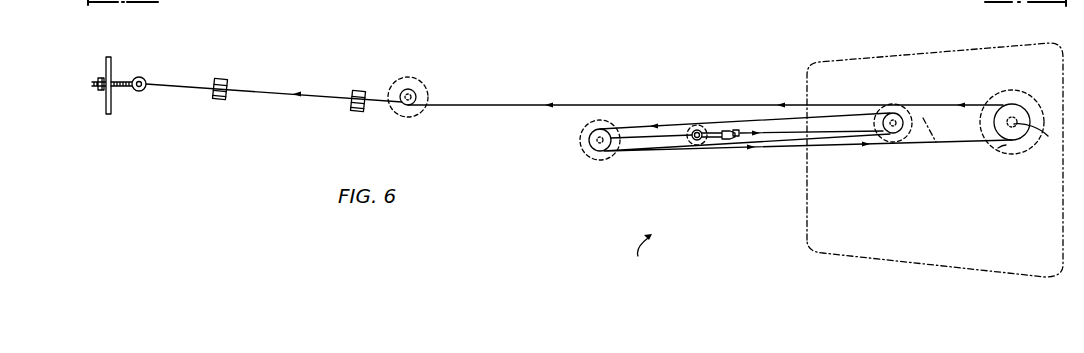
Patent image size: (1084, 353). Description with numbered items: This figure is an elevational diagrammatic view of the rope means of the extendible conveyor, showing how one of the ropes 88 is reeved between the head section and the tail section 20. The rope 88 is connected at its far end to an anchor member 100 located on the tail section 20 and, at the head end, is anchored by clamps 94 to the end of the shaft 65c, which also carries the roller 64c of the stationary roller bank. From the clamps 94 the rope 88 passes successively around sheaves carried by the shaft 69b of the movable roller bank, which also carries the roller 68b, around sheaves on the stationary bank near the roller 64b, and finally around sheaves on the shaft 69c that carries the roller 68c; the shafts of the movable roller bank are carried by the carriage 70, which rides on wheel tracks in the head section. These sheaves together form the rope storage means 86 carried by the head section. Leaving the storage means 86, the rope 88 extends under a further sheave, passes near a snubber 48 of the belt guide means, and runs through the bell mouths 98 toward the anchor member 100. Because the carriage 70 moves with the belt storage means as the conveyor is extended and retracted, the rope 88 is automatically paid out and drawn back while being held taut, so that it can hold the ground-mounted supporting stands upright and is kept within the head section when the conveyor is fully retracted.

The tail section 20 is at (112, 62).
The anchor member 100 is at (146, 78).
The bell mouths 98 is at (228, 81).
The ropes 88 is at (277, 95).
The snubber 48 is at (417, 78).
The shaft 69b is at (603, 137).
The roller 64b is at (583, 131).
The roller 64c is at (690, 124).
The shaft 65c is at (690, 146).
The clamps 94 is at (728, 138).
The rope storage means 86 is at (659, 251).
The carriage 70 is at (820, 253).
The roller 68b is at (933, 148).
The shaft 69c is at (1052, 145).
The roller 68c is at (1003, 146).